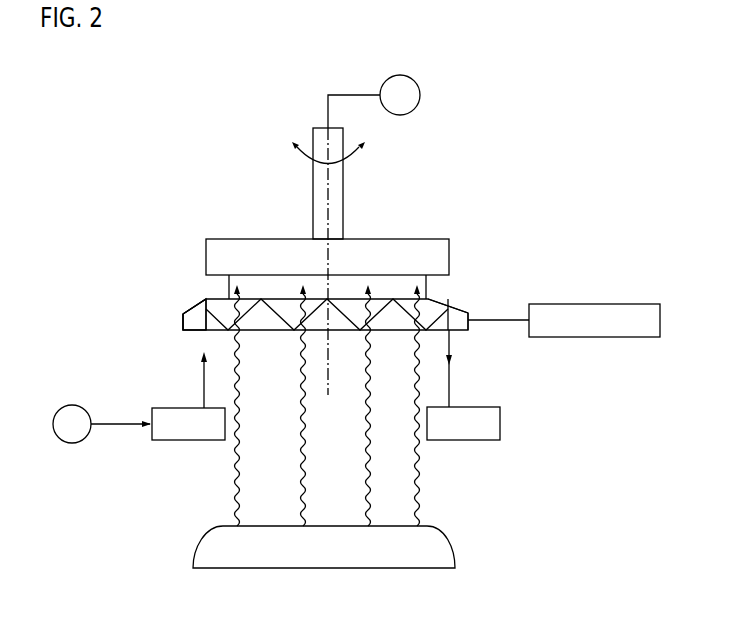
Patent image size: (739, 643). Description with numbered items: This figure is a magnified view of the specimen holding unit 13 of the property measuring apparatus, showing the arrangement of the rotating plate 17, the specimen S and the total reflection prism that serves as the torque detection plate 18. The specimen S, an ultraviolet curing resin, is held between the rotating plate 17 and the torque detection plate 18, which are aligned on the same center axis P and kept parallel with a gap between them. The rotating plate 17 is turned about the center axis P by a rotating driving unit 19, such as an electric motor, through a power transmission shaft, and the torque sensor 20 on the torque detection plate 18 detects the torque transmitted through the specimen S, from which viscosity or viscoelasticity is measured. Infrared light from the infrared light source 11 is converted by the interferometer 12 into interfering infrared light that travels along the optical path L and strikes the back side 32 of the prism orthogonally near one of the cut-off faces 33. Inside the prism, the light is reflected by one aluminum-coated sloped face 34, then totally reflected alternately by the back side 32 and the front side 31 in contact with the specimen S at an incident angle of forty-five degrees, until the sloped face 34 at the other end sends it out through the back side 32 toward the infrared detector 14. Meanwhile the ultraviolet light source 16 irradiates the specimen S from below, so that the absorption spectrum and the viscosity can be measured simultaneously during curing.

The infrared light source 11 is at (72, 443).
The interferometer 12 is at (165, 442).
The specimen holding unit 13 is at (522, 155).
The infrared detector 14 is at (463, 440).
The ultraviolet light source 16 is at (325, 568).
The rotating plate 17 is at (240, 239).
The torque detection plate (total reflection prism) 18 is at (200, 325).
The rotating driving unit 19 is at (400, 75).
The torque sensor 20 is at (591, 304).
The front side 31 is at (382, 296).
The back side 32 is at (398, 333).
The cut-off faces 33 is at (181, 321).
The sloped faces 34 is at (197, 309).
The specimen S is at (229, 290).
The center axis P is at (330, 190).
The optical path L is at (211, 373).